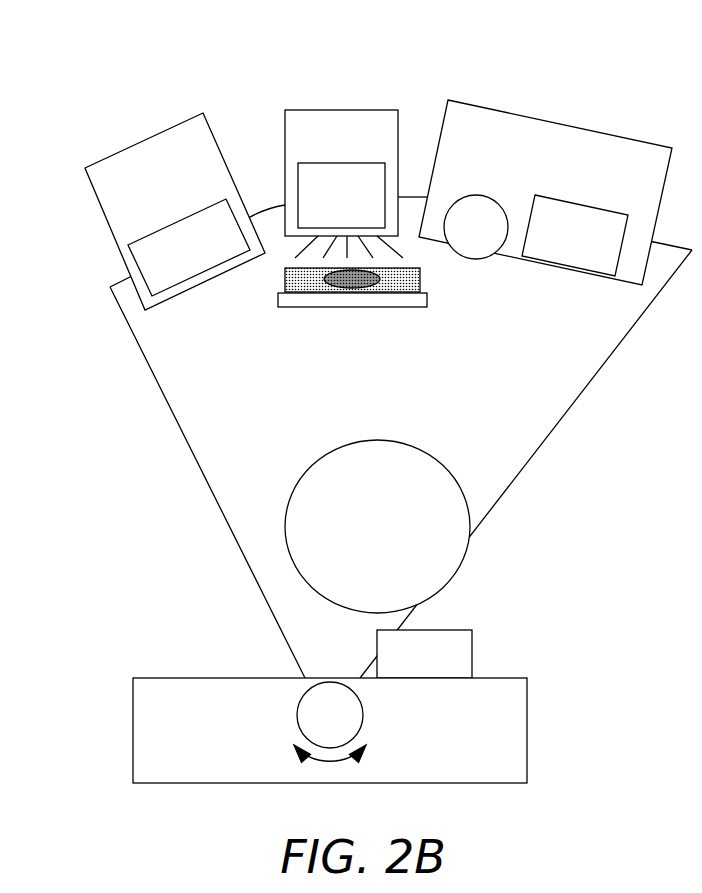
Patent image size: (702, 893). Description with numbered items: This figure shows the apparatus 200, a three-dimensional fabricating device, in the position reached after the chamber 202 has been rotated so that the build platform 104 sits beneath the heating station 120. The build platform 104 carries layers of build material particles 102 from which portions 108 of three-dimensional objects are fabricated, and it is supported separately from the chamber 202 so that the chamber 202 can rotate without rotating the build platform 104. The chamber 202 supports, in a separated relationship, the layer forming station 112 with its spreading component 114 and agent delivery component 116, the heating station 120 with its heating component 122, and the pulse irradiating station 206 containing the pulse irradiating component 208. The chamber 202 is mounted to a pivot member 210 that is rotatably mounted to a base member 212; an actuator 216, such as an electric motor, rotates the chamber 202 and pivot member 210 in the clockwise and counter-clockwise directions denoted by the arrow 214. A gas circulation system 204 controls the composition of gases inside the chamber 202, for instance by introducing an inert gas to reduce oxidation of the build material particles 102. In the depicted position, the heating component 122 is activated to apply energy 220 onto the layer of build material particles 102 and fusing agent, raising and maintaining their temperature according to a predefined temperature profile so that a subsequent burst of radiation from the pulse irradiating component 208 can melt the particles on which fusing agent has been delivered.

The apparatus 200 is at (388, 44).
The chamber 202 is at (510, 488).
The gas circulation system 204 is at (358, 537).
The pulse irradiating station 206 is at (175, 211).
The pulse irradiating component 208 is at (189, 247).
The pivot member 210 is at (360, 698).
The base member 212 is at (168, 677).
The arrow 214 is at (363, 753).
The actuator 216 is at (404, 662).
The energy 220 is at (393, 246).
The build material particles 102 is at (284, 288).
The build platform 104 is at (307, 308).
The portions of 3D objects 108 is at (363, 289).
The layer forming station 112 is at (545, 192).
The spreading component 114 is at (474, 196).
The agent delivery component 116 is at (575, 235).
The heating station 120 is at (323, 145).
The heating component 122 is at (323, 207).